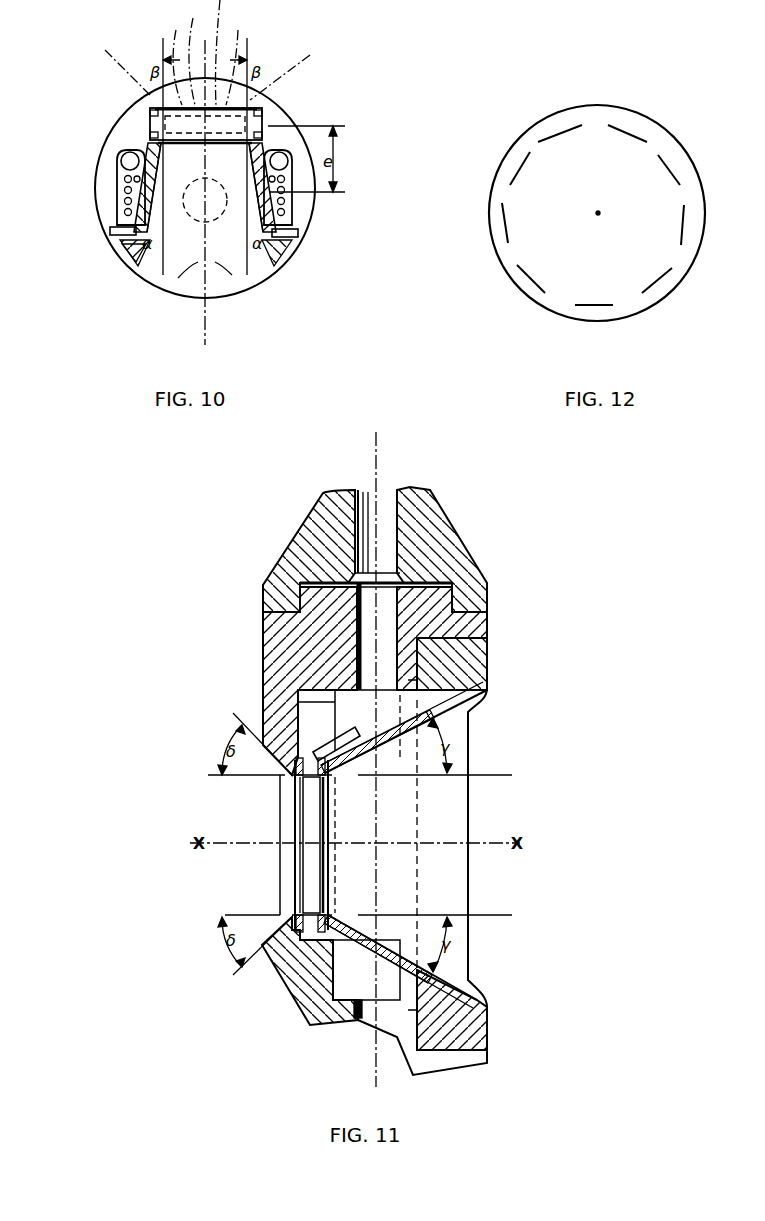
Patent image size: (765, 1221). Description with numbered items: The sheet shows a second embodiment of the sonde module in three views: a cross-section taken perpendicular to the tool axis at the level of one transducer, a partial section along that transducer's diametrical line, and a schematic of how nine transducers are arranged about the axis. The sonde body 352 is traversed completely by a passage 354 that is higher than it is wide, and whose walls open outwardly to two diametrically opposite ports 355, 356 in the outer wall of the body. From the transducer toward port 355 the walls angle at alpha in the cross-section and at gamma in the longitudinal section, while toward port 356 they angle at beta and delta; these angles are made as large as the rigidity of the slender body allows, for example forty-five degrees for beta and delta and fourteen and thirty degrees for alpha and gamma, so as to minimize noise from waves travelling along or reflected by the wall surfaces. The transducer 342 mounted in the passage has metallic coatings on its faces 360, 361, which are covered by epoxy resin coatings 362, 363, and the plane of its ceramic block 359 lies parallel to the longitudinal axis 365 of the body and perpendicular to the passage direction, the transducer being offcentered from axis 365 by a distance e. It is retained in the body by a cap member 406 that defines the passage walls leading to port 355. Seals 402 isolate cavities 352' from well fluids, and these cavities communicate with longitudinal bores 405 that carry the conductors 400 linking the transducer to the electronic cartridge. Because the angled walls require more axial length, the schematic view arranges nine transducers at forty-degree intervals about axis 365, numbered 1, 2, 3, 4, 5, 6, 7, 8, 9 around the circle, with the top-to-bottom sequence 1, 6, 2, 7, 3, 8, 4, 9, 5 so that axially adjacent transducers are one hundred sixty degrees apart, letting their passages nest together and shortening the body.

In FIG. 11, the transducer 342 is at (292, 876).
In FIG. 10, the sonde body 352 is at (170, 168).
In FIG. 11, the sonde body 352 is at (310, 822).
In FIG. 10, the cavities 352' is at (212, 197).
In FIG. 11, the cavities 352' is at (336, 835).
In FIG. 10, the passage 354 is at (233, 278).
In FIG. 11, the passage 354 is at (455, 823).
In FIG. 10, the port 355 is at (178, 280).
In FIG. 11, the port 355 is at (453, 883).
In FIG. 10, the port 356 is at (210, 70).
In FIG. 11, the port 356 is at (283, 857).
In FIG. 10, the ceramic block 359 is at (276, 80).
In FIG. 10, the face 360 is at (182, 55).
In FIG. 10, the face 361 is at (178, 147).
In FIG. 10, the epoxy resin coating 362 is at (185, 64).
In FIG. 10, the epoxy resin coating 363 is at (230, 147).
In FIG. 10, the longitudinal axis 365 is at (197, 215).
In FIG. 12, the longitudinal axis 365 is at (598, 213).
In FIG. 11, the longitudinal axis 365 is at (376, 440).
In FIG. 10, the conductors 400 is at (124, 190).
In FIG. 10, the seals 402 is at (110, 229).
In FIG. 11, the seals 402 is at (291, 985).
In FIG. 11, the longitudinal bores 405 is at (377, 590).
In FIG. 10, the cap member 406 is at (126, 246).
In FIG. 12, the transducer position 1 is at (594, 292).
In FIG. 12, the transducer position 2 is at (655, 279).
In FIG. 12, the transducer position 3 is at (671, 225).
In FIG. 12, the transducer position 4 is at (663, 170).
In FIG. 12, the transducer position 5 is at (627, 144).
In FIG. 12, the transducer position 6 is at (560, 140).
In FIG. 12, the transducer position 7 is at (524, 170).
In FIG. 12, the transducer position 8 is at (516, 223).
In FIG. 12, the transducer position 9 is at (534, 278).